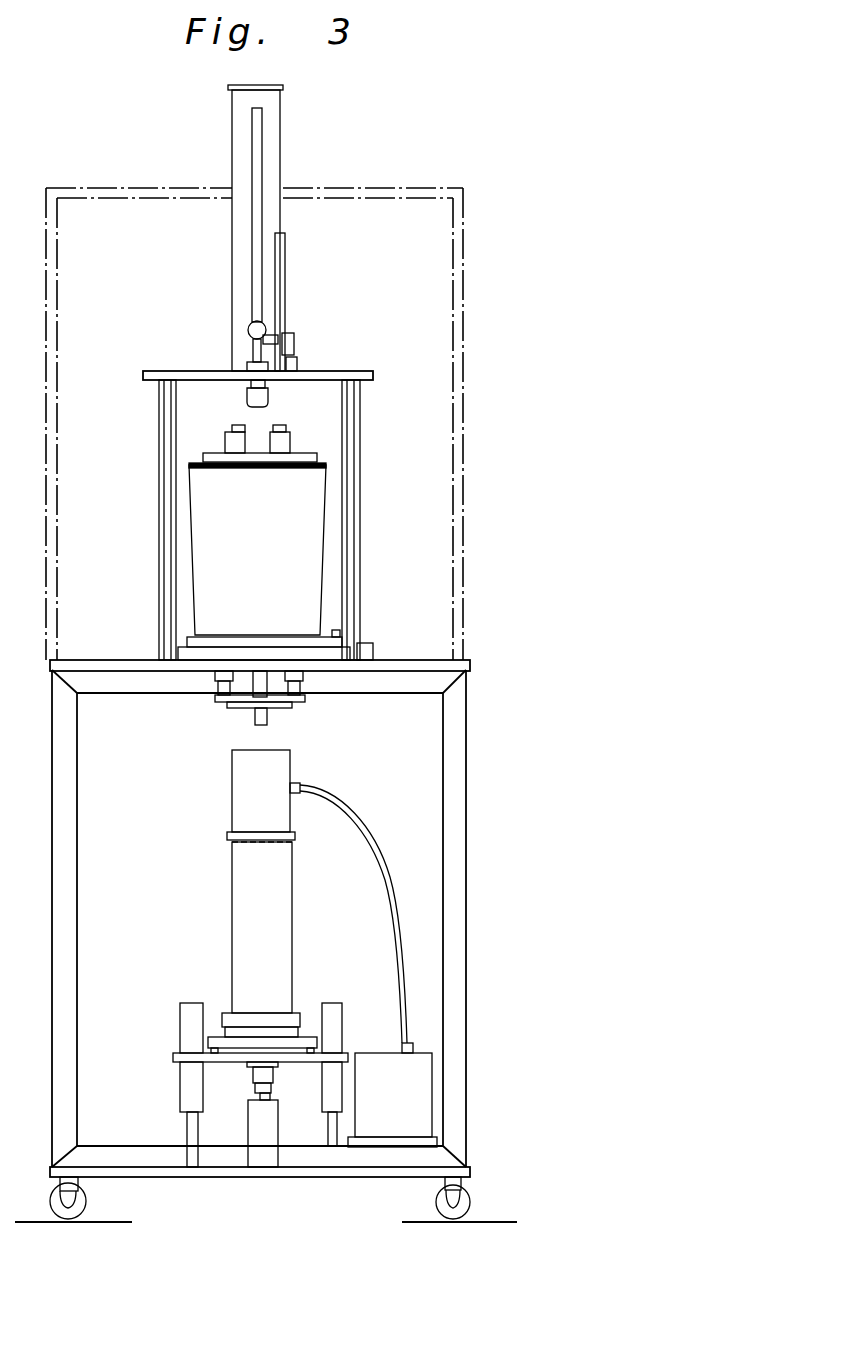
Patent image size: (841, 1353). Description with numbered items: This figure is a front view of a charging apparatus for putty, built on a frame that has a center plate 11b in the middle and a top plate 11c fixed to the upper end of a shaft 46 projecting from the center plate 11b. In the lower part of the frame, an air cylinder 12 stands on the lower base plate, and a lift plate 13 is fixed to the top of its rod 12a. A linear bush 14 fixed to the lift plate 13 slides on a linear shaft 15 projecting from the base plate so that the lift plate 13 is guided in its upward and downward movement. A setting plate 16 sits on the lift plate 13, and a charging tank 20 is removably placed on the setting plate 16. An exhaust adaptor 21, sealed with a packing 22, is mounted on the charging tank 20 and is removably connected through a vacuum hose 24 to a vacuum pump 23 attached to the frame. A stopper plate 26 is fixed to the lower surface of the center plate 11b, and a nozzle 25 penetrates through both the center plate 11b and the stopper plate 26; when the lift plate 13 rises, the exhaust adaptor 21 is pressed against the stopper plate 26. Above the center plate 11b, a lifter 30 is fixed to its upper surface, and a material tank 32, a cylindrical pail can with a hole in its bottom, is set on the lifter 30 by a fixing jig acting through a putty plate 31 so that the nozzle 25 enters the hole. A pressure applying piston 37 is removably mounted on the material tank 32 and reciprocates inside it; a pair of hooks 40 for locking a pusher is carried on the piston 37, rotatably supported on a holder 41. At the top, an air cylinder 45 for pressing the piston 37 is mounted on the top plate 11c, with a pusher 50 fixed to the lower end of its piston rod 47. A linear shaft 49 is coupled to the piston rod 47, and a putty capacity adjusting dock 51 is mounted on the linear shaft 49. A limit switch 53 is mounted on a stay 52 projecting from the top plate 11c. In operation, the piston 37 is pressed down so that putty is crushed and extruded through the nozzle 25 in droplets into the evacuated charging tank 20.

The center plate 11b is at (445, 666).
The top plate 11c is at (322, 373).
The air cylinder 12 is at (270, 1130).
The rod 12a is at (250, 1080).
The lift plate 13 is at (173, 1057).
The linear bush 14 is at (190, 1090).
The linear shaft 15 is at (193, 1145).
The setting plate 16 is at (305, 1040).
The charging tank 20 is at (275, 940).
The exhaust adaptor 21 is at (293, 817).
The packing 22 is at (298, 831).
The vacuum pump 23 is at (412, 1109).
The vacuum hose 24 is at (397, 903).
The nozzle 25 is at (253, 723).
The stopper plate 26 is at (232, 705).
The lifter 30 is at (370, 642).
The putty plate 31 is at (212, 634).
The material tank 32 is at (322, 507).
The pressure applying piston 37 is at (200, 456).
The hooks 40 is at (283, 425).
The holder 41 is at (288, 440).
The air cylinder 45 is at (270, 162).
The shaft 46 is at (358, 445).
The piston rod 47 is at (248, 385).
The linear shaft 49 is at (255, 207).
The pusher 50 is at (268, 400).
The putty capacity adjusting dock 51 is at (263, 328).
The stay 52 is at (280, 273).
The limit switch 53 is at (275, 338).